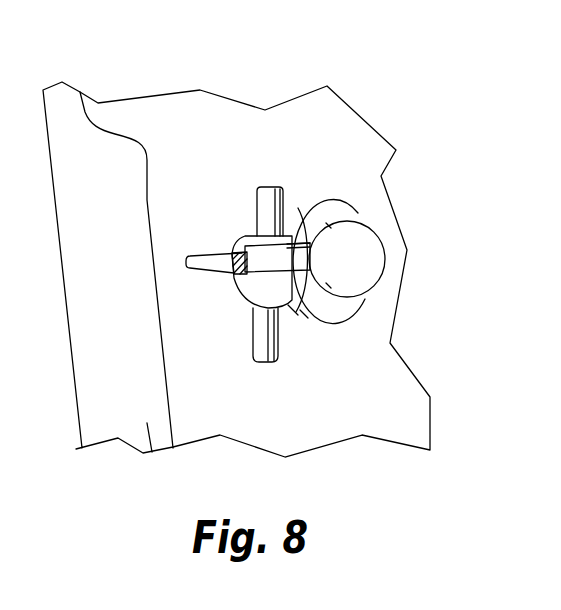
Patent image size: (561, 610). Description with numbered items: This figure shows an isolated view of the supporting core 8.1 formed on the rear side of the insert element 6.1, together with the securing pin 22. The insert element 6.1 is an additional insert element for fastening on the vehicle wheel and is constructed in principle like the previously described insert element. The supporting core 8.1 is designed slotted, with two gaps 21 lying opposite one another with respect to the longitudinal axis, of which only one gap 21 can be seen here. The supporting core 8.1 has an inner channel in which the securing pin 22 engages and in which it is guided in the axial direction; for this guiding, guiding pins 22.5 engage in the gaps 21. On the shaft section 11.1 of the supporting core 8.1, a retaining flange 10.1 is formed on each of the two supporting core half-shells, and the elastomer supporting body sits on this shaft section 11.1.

The insert element 6.1 is at (341, 416).
The supporting core 8.1 is at (279, 189).
The retaining flange 10.1 is at (341, 202).
The shaft section 11.1 is at (265, 292).
The gap 21 is at (242, 253).
The securing pin 22 is at (354, 241).
The guiding pin 22.5 is at (258, 268).